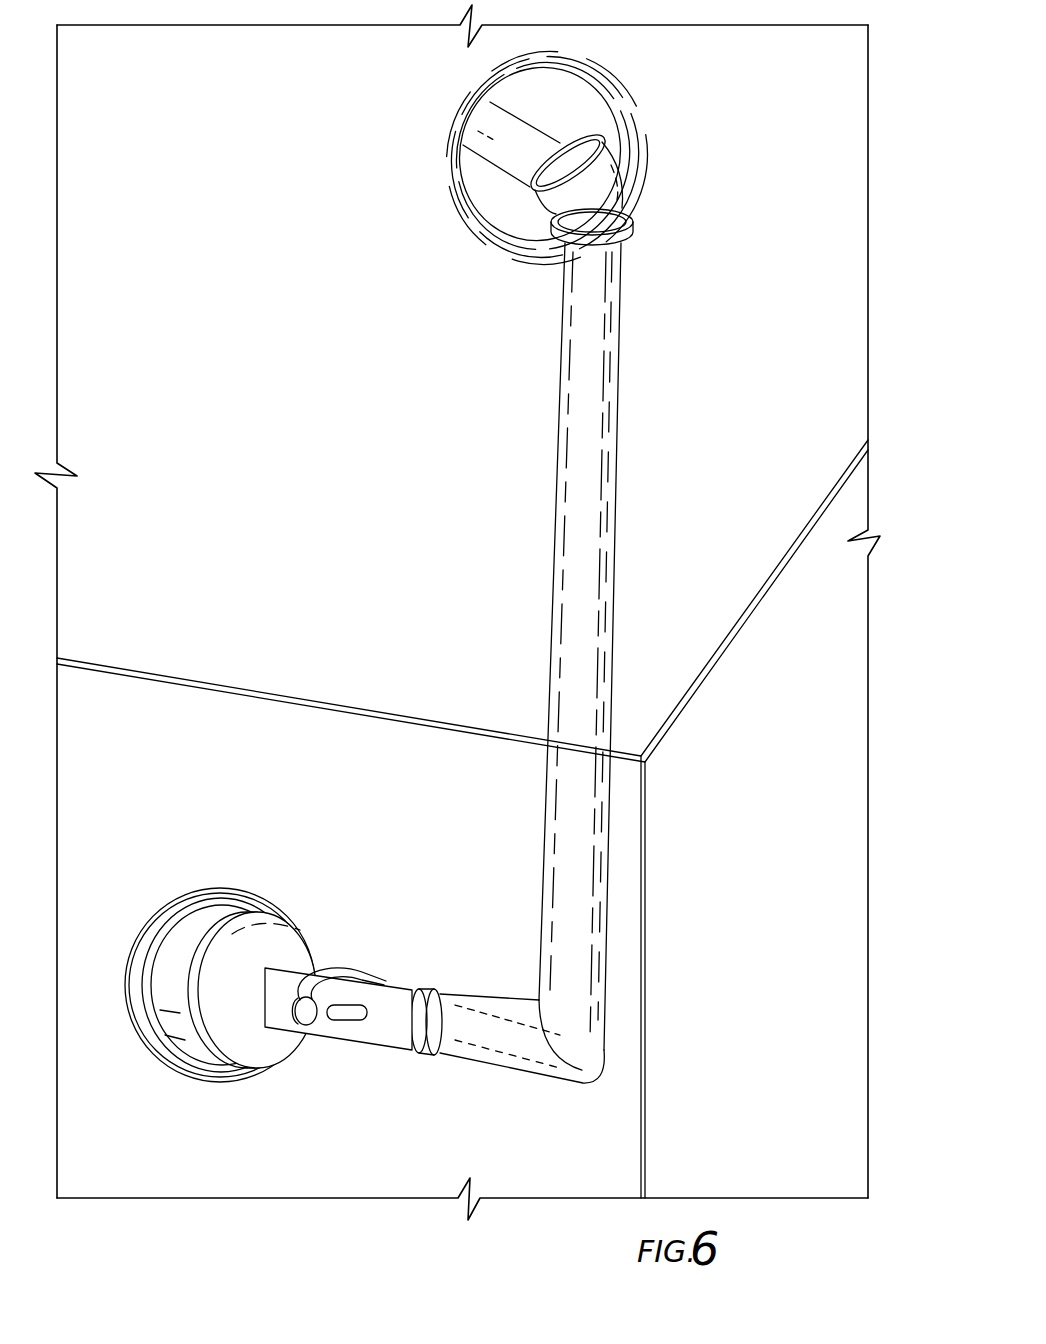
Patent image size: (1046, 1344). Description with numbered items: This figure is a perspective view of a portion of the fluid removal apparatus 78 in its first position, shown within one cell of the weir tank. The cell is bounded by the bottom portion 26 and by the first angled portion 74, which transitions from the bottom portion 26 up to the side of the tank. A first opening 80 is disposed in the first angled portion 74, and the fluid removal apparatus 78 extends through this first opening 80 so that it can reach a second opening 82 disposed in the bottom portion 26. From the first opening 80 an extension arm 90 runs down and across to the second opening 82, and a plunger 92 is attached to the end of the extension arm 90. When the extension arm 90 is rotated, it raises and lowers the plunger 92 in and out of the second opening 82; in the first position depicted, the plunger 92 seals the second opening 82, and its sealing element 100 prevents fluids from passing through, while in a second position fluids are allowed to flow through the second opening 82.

The bottom portion 26 is at (250, 804).
The first angled portion 74 is at (315, 447).
The fluid removal apparatus 78 is at (688, 291).
The first opening 80 is at (470, 212).
The second opening 82 is at (142, 935).
The extension arm 90 is at (588, 487).
The plunger 92 is at (292, 940).
The sealing element 100 is at (188, 908).